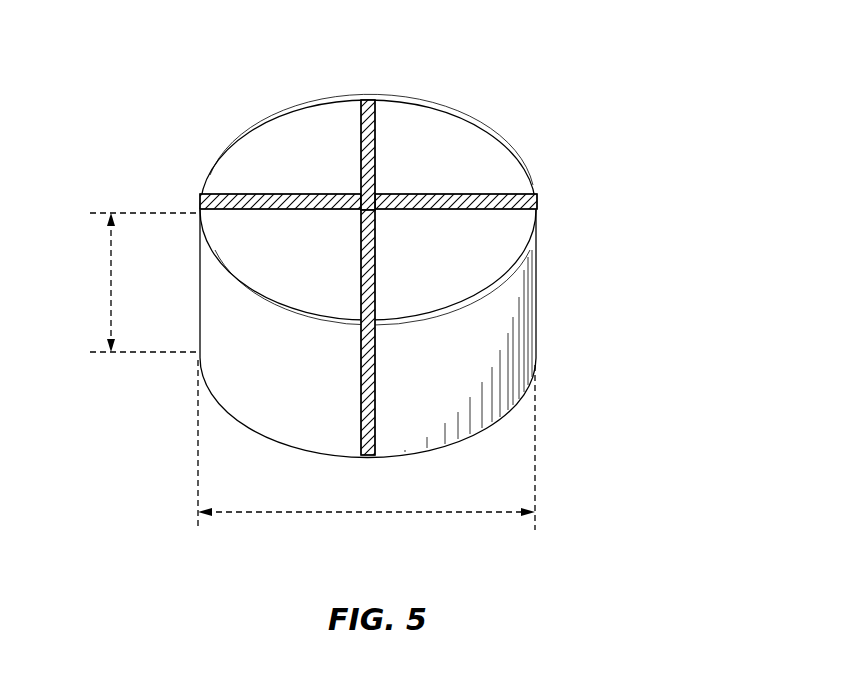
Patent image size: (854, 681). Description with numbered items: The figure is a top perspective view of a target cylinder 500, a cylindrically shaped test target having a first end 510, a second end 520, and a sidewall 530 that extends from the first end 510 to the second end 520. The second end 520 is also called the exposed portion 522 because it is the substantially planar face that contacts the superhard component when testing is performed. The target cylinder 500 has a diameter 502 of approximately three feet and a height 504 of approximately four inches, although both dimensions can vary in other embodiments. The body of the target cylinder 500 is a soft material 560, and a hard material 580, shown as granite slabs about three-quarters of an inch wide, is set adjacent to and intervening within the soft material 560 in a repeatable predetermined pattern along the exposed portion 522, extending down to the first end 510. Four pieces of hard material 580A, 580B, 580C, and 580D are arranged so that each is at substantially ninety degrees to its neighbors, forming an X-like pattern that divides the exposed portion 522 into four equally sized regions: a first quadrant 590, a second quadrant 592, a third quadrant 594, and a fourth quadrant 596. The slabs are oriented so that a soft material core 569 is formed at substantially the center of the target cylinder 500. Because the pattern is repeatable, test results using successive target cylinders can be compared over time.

The target cylinder 500 is at (638, 50).
The diameter 502 is at (367, 512).
The height 504 is at (110, 285).
The first end 510 is at (448, 443).
The second end 520 is at (452, 130).
The exposed portion 522 is at (482, 153).
The sidewall 530 is at (520, 325).
The soft material 560 is at (216, 233).
The soft material core 569 is at (362, 198).
The hard material 580 is at (370, 263).
The hard material 580A is at (420, 197).
The hard material 580B is at (362, 120).
The hard material 580C is at (208, 194).
The hard material 580D is at (379, 283).
The first quadrant 590 is at (405, 118).
The second quadrant 592 is at (252, 147).
The third quadrant 594 is at (287, 290).
The fourth quadrant 596 is at (515, 235).